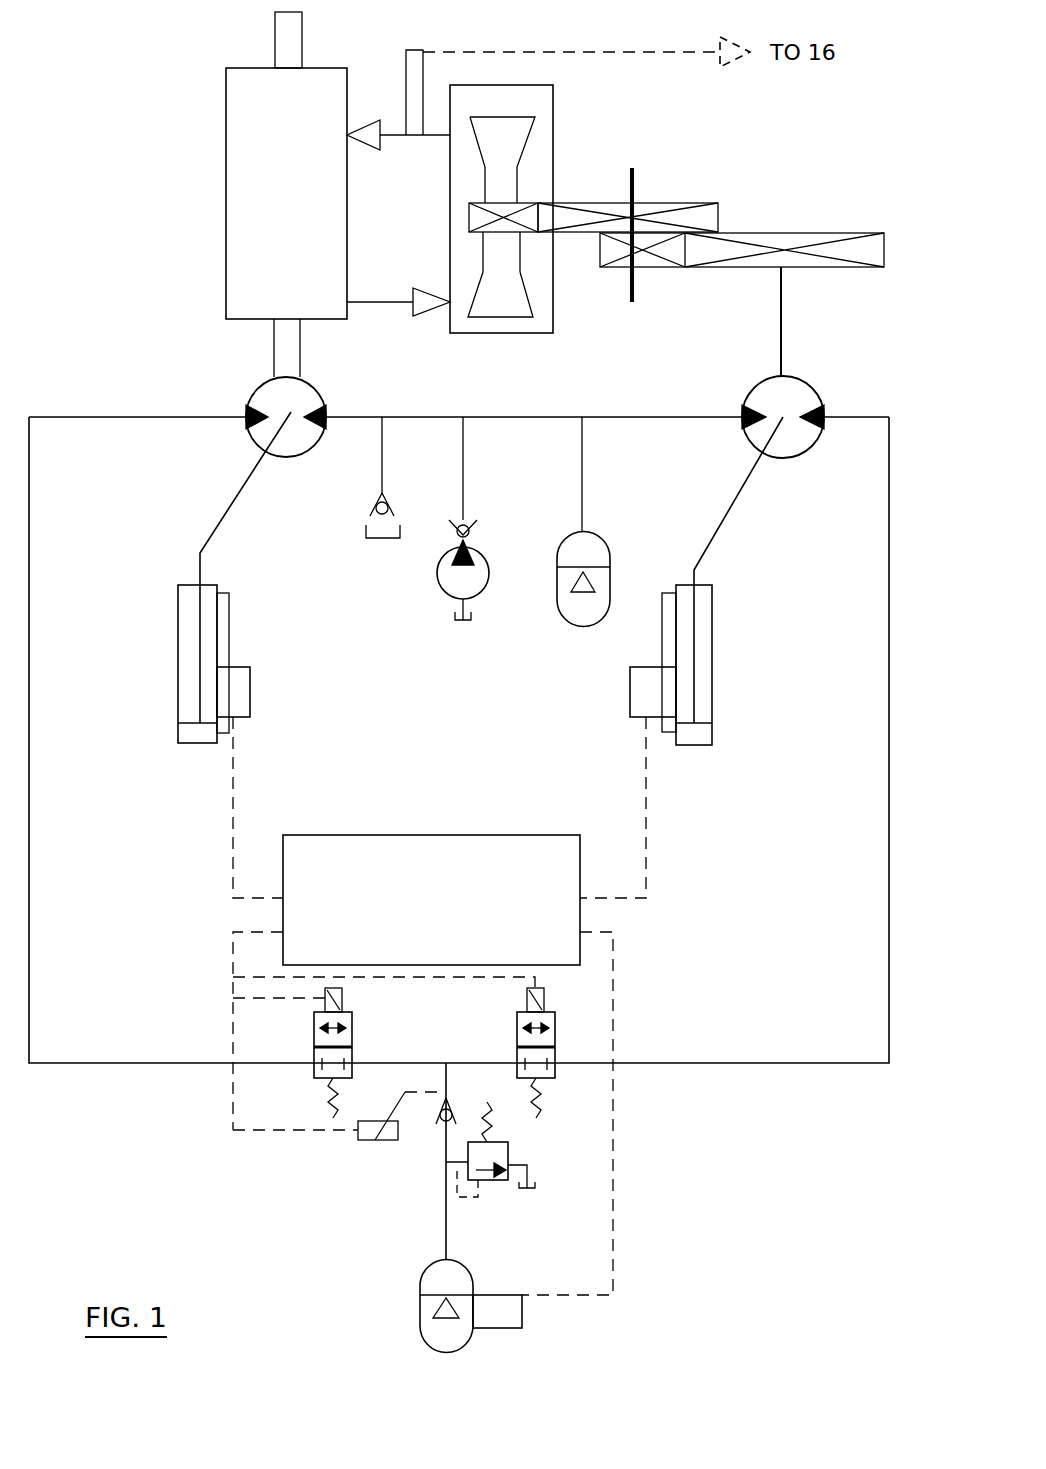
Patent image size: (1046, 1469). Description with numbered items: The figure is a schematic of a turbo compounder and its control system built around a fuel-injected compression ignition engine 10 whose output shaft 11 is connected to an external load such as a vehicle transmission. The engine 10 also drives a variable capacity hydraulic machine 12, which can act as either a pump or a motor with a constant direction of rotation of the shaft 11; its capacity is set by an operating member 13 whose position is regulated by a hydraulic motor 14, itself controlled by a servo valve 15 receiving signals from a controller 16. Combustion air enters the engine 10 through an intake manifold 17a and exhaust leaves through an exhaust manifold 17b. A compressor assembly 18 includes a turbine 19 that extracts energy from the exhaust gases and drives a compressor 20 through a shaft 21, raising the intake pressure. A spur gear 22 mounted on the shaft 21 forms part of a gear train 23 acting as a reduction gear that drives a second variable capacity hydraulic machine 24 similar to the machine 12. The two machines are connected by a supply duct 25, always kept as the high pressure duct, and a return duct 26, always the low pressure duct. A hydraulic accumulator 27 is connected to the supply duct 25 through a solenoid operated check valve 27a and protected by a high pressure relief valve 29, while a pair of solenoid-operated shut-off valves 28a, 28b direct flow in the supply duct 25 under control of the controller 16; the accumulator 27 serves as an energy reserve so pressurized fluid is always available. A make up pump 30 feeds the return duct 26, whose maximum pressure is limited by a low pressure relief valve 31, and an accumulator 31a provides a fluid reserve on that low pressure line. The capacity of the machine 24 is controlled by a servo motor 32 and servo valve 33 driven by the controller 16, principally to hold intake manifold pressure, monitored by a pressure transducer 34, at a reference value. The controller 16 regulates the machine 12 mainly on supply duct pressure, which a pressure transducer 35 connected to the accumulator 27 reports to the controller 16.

The engine 10 is at (226, 150).
The output shaft 11 is at (284, 44).
The hydraulic machine 12 is at (258, 395).
The operating member 13 is at (220, 518).
The hydraulic motor 14 is at (178, 646).
The servo valve 15 is at (238, 668).
The controller 16 is at (562, 950).
The intake manifold 17a is at (424, 137).
The exhaust manifold 17b is at (383, 303).
The compressor assembly 18 is at (470, 345).
The turbine 19 is at (512, 308).
The compressor 20 is at (520, 134).
The shaft 21 is at (510, 258).
The spur gear 22 is at (522, 212).
The gear train 23 is at (725, 188).
The variable capacity hydraulic machine 24 is at (790, 445).
The supply duct 25 is at (888, 512).
The return duct 26 is at (640, 420).
The hydraulic accumulator 27 is at (435, 1273).
The solenoid operated check valve 27a is at (458, 1108).
The solenoid-operated shut-off valve 28a is at (352, 1033).
The solenoid-operated shut-off valve 28b is at (555, 1040).
The high pressure relief valve 29 is at (510, 1152).
The make up pump 30 is at (440, 572).
The low pressure relief valve 31 is at (365, 495).
The accumulator 31a is at (565, 583).
The servo motor 32 is at (712, 698).
The servo valve 33 is at (630, 690).
The pressure transducer 34 is at (406, 62).
The pressure transducer 35 is at (513, 1315).